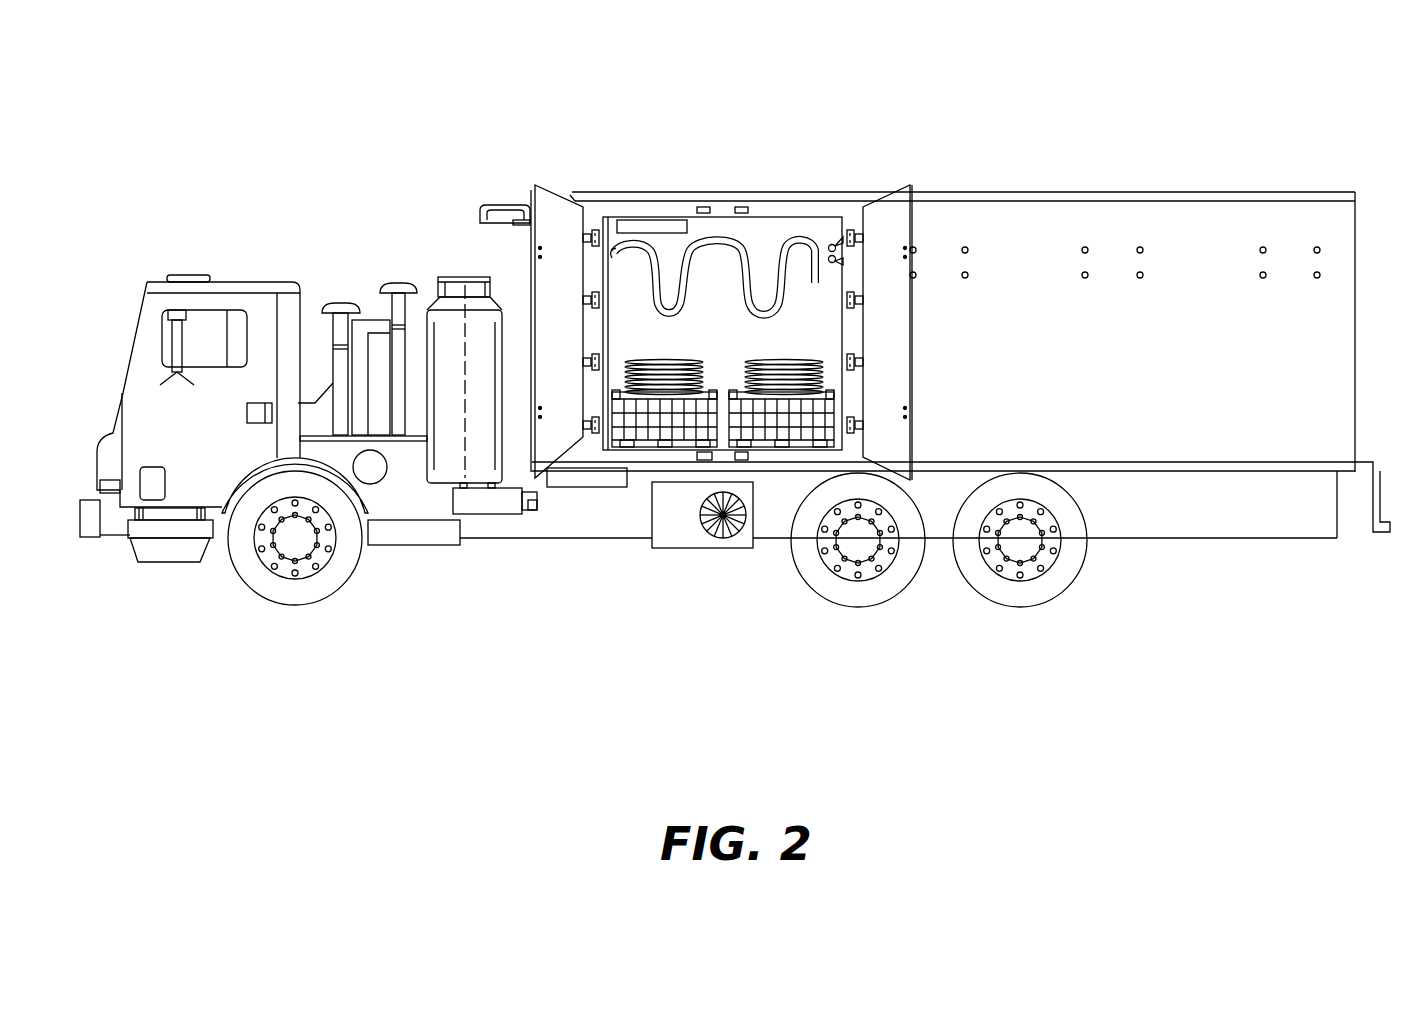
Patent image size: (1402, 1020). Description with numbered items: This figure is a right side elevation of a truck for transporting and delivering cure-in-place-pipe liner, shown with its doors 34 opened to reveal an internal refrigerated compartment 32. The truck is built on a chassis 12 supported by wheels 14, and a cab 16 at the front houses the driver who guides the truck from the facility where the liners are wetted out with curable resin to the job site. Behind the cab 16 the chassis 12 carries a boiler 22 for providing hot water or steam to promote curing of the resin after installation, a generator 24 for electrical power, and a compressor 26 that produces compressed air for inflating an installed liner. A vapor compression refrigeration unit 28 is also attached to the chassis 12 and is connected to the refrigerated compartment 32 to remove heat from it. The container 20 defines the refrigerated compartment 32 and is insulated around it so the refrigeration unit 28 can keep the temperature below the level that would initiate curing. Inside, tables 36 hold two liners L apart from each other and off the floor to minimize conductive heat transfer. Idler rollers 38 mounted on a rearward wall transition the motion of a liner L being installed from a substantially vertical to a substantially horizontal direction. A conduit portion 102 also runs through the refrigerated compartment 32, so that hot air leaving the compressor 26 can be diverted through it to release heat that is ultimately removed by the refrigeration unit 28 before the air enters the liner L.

The chassis 12 is at (510, 540).
The wheels 14 is at (254, 600).
The cab 16 is at (246, 276).
The container 20 is at (1206, 185).
The boiler 22 is at (457, 276).
The generator 24 is at (374, 292).
The compressor 26 is at (600, 488).
The vapor compression refrigeration unit 28 is at (690, 549).
The refrigerated compartment 32 is at (620, 327).
The doors 34 is at (530, 243).
The tables 36 is at (810, 415).
The idler rollers 38 is at (831, 245).
The conduit portion 102 is at (747, 258).
The liners L is at (700, 358).